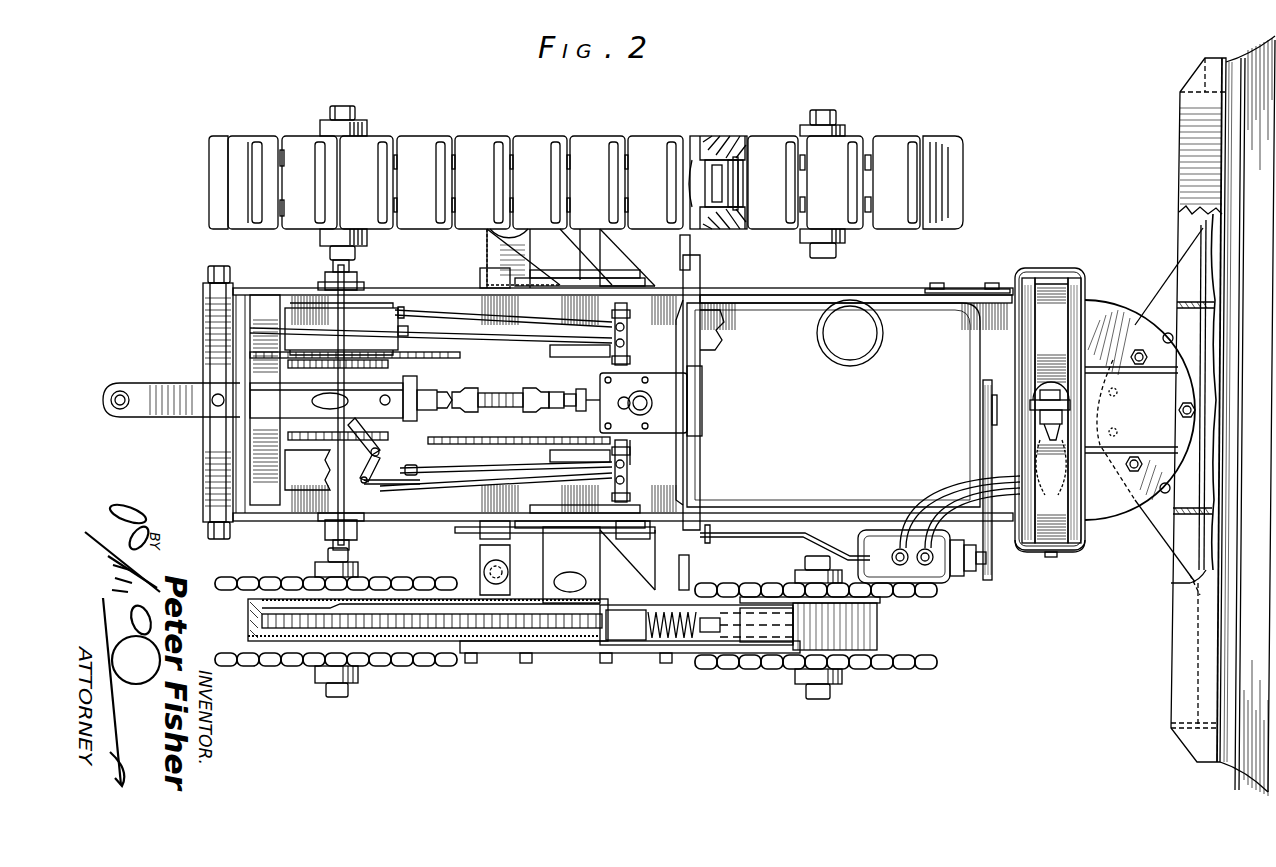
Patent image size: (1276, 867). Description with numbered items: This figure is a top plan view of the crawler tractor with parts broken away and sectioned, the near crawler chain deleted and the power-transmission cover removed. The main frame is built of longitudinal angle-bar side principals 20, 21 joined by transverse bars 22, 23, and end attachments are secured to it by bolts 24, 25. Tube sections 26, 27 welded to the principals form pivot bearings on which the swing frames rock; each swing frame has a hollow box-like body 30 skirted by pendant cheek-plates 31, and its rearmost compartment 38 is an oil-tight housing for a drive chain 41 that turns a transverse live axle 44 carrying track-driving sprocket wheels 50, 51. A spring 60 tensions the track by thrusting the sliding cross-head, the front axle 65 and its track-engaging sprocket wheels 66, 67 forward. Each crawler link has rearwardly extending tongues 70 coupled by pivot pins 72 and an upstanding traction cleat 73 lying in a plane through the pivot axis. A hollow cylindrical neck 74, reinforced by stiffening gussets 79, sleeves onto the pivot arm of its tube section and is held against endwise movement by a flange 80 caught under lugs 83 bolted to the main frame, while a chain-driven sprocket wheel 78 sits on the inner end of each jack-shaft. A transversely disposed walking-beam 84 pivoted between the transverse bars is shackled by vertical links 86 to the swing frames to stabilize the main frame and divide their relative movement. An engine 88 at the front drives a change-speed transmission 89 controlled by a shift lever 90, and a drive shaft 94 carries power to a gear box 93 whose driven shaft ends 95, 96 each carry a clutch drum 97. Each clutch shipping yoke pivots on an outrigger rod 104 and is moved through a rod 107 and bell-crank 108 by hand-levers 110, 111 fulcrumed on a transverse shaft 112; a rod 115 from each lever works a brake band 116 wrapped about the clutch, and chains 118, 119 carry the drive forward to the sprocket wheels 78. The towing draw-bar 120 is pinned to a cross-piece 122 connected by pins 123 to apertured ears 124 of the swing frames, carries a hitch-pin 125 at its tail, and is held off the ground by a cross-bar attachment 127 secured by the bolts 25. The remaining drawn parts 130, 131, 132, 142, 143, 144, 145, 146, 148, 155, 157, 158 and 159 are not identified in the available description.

The angle-bar side principal 20 is at (876, 298).
The angle-bar side principal 21 is at (443, 521).
The transverse bar 22 is at (718, 346).
The transverse bar 23 is at (692, 372).
The bolt 24 is at (990, 283).
The bolt 25 is at (219, 268).
The tube section 26 is at (575, 300).
The tube section 27 is at (560, 500).
The hollow box-like body 30 is at (718, 178).
The pendant cheek-plate 31 is at (515, 655).
The rearmost compartment 38 is at (455, 640).
The drive chain 41 is at (412, 612).
The transverse live axle 44 is at (345, 106).
The track-driving sprocket wheel 50 is at (322, 236).
The track-driving sprocket wheel 51 is at (325, 125).
The spring 60 is at (648, 640).
The front axle 65 is at (822, 110).
The track-engaging sprocket wheel 66 is at (845, 130).
The track-engaging sprocket wheel 67 is at (845, 240).
The tongue 70 is at (282, 160).
The pivot pin 72 is at (736, 183).
The traction cleat 73 is at (248, 156).
The hollow cylindrical neck 74 is at (585, 236).
The chain-driven sprocket wheel 78 is at (560, 351).
The stiffening gusset 79 is at (628, 258).
The flange 80 is at (572, 530).
The lug 83 is at (480, 277).
The walking-beam 84 is at (700, 290).
The vertical link 86 is at (690, 248).
The engine 88 is at (776, 290).
The change-speed transmission 89 is at (672, 425).
The shift lever 90 is at (652, 403).
The gear box 93 is at (333, 398).
The drive shaft 94 is at (467, 390).
The driven shaft end 95 is at (333, 266).
The driven shaft end 96 is at (333, 541).
The drum 97 is at (503, 312).
The outrigger rod 104 is at (340, 333).
The rod 107 is at (430, 487).
The bell-crank 108 is at (382, 462).
The hand-lever 110 is at (628, 462).
The hand-lever 111 is at (628, 335).
The transverse shaft 112 is at (636, 444).
The rod 115 is at (440, 464).
The brake band 116 is at (431, 341).
The chain 118 is at (432, 365).
The chain 119 is at (490, 444).
The towing draw-bar 120 is at (162, 416).
The cross-piece 122 is at (480, 259).
The pin 123 is at (486, 236).
The apertured ear 124 is at (484, 574).
The hitch-pin 125 is at (120, 391).
The cross-bar attachment 127 is at (212, 315).
The blade 130 is at (1262, 56).
The blade mounting bracket 131 is at (1072, 270).
The bracket bottom 132 is at (1068, 552).
The hydraulic hose 142 is at (968, 490).
The hydraulic hose 143 is at (945, 503).
The hydraulic cylinder 144 is at (958, 582).
The cylinder mounting plate 145 is at (984, 455).
The hydraulic line 146 is at (755, 538).
The blade swing plate 148 is at (1122, 320).
The blade brace 155 is at (1168, 290).
The pivot bolt 157 is at (1180, 408).
The adjusting bolt 158 is at (1134, 458).
The adjusting bolt 159 is at (1138, 364).